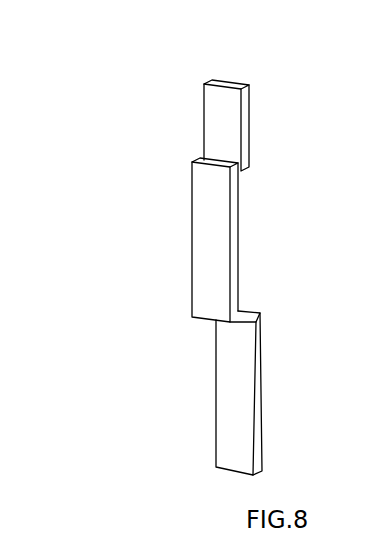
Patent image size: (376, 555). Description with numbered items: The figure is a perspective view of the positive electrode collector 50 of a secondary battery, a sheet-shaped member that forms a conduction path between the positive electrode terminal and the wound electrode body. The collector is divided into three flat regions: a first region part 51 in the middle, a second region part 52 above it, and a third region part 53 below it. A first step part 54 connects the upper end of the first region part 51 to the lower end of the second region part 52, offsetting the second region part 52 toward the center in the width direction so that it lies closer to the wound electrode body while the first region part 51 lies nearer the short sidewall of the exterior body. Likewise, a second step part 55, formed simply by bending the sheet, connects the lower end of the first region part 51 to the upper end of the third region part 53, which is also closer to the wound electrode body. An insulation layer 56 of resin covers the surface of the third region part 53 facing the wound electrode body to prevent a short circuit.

The positive electrode collector 50 is at (51, 42).
The first region part 51 is at (205, 247).
The second region part 52 is at (218, 108).
The third region part 53 is at (232, 401).
The first step part 54 is at (197, 160).
The second step part 55 is at (245, 309).
The insulation layer 56 is at (264, 369).